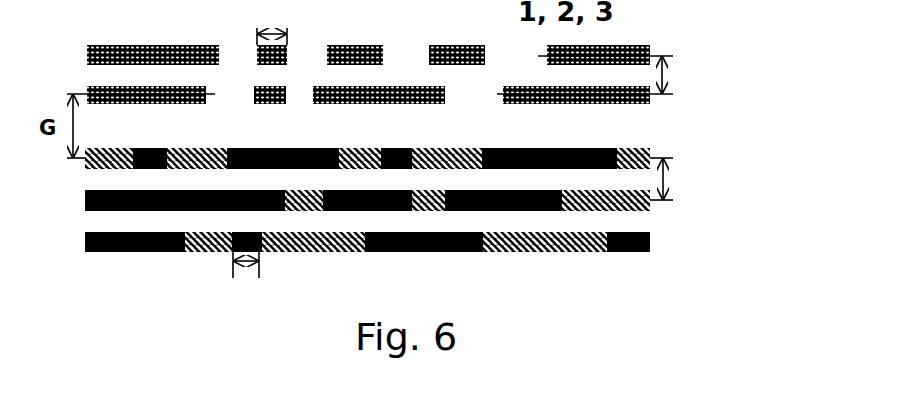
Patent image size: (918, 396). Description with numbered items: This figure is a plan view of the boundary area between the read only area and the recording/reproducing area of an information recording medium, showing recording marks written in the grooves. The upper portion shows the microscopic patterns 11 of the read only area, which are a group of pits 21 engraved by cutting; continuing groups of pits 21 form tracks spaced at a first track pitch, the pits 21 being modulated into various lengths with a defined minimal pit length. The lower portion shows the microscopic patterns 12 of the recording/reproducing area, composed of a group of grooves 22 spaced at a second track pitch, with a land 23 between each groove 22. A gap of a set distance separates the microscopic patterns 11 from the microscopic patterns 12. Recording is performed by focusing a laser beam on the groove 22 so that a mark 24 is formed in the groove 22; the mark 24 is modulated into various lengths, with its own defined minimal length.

The microscopic patterns of the read only area 11 is at (425, 55).
The microscopic patterns of the recording/reproducing area 12 is at (422, 228).
The pit 21 is at (355, 45).
The groove 22 is at (548, 252).
The land 23 is at (112, 221).
The mark 24 is at (367, 259).